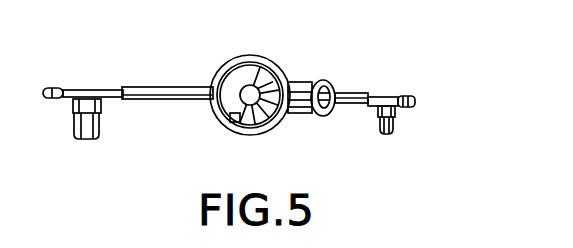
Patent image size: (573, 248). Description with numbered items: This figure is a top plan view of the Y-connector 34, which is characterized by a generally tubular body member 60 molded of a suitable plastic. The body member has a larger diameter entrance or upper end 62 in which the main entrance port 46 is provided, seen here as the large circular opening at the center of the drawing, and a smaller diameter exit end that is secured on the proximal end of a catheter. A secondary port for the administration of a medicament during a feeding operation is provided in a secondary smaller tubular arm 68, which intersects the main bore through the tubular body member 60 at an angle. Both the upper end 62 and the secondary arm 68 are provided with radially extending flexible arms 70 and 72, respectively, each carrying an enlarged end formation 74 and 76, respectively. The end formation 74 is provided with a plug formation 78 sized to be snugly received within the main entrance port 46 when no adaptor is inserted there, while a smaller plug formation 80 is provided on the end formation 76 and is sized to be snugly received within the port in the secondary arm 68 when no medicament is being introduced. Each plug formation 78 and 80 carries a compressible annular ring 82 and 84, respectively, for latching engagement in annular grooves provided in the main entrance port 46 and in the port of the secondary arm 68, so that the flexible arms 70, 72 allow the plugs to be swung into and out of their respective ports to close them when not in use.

The Y-connector 34 is at (265, 135).
The main entrance port 46 is at (232, 122).
The tubular body member 60 is at (277, 63).
The upper end 62 is at (247, 100).
The secondary tubular arm 68 is at (318, 79).
The flexible arm 70 is at (170, 98).
The flexible arm 72 is at (349, 104).
The end formation 74 is at (59, 102).
The end formation 76 is at (428, 118).
The plug formation 78 is at (73, 133).
The plug formation 80 is at (395, 125).
The compressible annular ring 82 is at (72, 113).
The compressible annular ring 84 is at (395, 116).